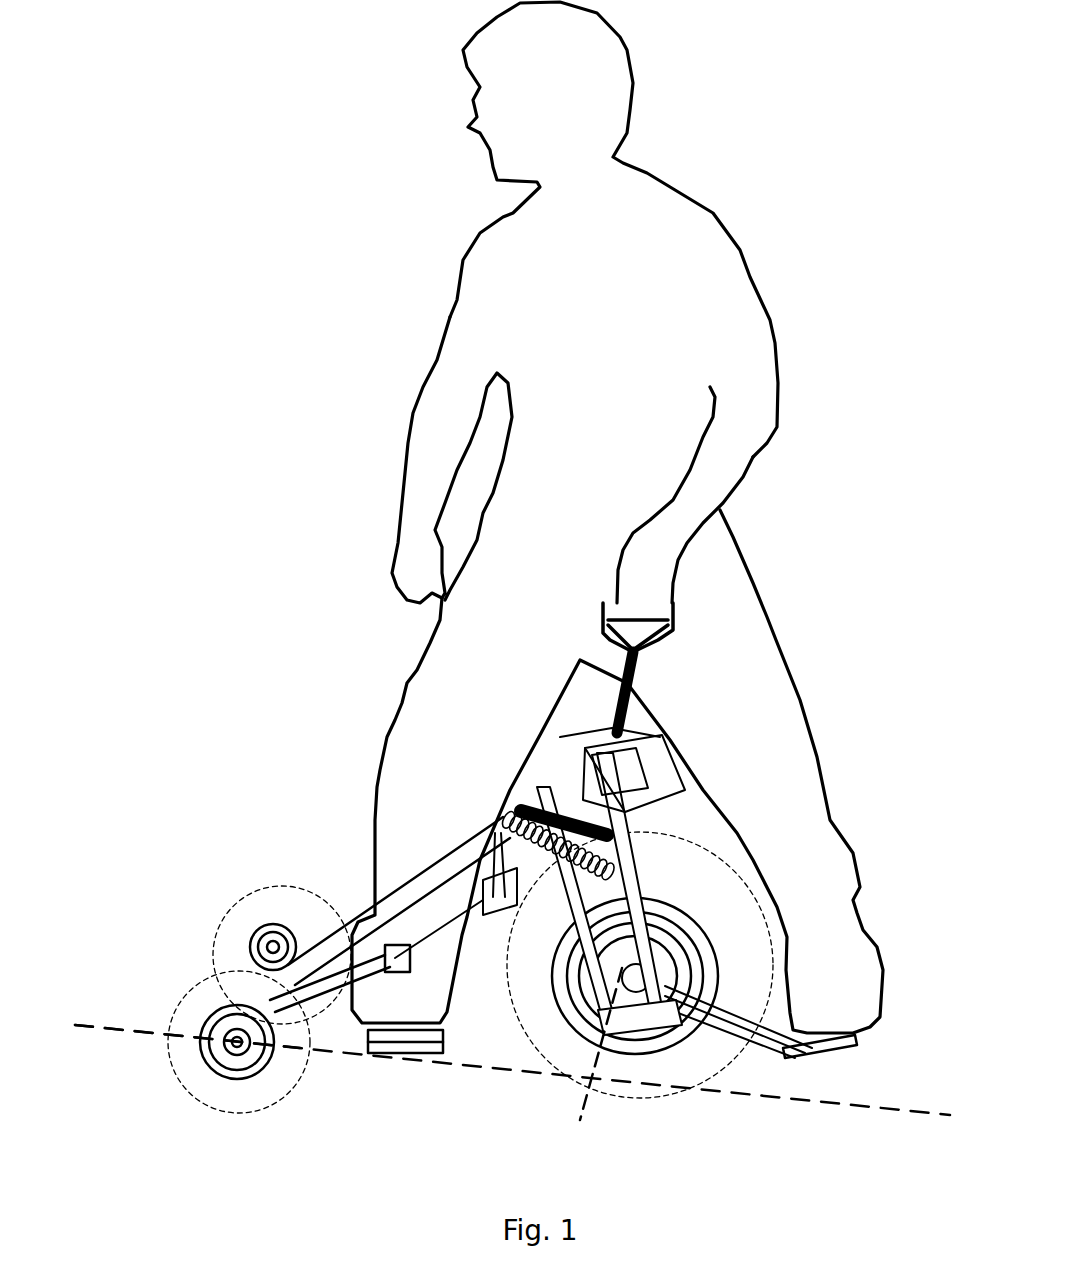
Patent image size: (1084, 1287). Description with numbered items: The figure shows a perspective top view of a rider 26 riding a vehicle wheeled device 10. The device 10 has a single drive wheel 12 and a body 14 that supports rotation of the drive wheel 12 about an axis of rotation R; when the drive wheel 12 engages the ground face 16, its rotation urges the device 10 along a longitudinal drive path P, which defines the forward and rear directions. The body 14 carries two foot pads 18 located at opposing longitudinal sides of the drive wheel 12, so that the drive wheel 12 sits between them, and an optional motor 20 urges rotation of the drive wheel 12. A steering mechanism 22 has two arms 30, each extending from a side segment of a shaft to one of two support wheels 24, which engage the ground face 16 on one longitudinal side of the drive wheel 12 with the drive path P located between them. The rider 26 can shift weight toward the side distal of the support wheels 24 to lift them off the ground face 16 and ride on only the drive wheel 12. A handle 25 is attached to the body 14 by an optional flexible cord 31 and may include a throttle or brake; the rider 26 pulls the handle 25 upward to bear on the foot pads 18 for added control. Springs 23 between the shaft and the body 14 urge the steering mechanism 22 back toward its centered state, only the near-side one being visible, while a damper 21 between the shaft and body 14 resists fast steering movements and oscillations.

The vehicle wheeled device 10 is at (247, 760).
The drive wheel 12 is at (657, 1085).
The body 14 is at (687, 808).
The ground face 16 is at (118, 1010).
The foot pads 18 is at (383, 1047).
The motor 20 is at (657, 990).
The damper 21 is at (607, 836).
The steering mechanism 22 is at (347, 820).
The springs 23 is at (617, 872).
The support wheels 24 is at (205, 997).
The handle 25 is at (673, 624).
The rider 26 is at (695, 107).
The arms 30 is at (363, 893).
The flexible cord 31 is at (637, 680).
The longitudinal drive path P is at (112, 1040).
The axis of rotation R is at (585, 1110).